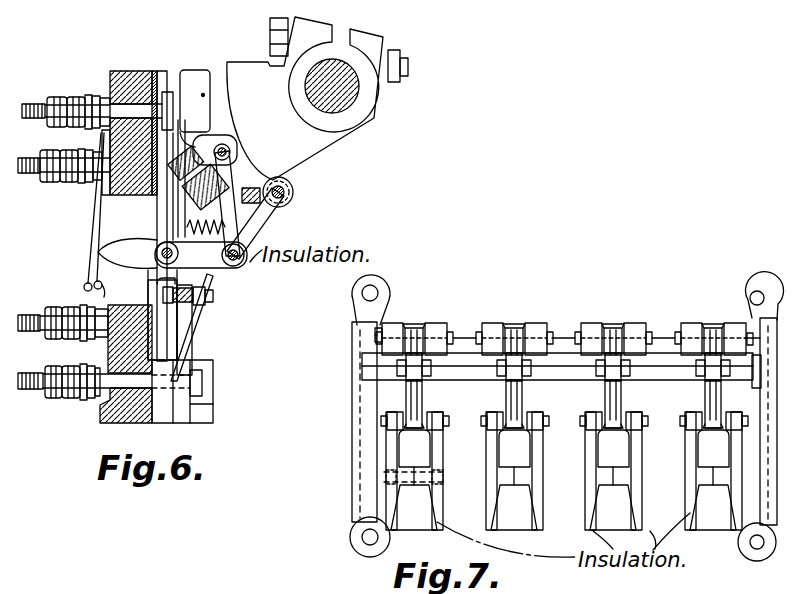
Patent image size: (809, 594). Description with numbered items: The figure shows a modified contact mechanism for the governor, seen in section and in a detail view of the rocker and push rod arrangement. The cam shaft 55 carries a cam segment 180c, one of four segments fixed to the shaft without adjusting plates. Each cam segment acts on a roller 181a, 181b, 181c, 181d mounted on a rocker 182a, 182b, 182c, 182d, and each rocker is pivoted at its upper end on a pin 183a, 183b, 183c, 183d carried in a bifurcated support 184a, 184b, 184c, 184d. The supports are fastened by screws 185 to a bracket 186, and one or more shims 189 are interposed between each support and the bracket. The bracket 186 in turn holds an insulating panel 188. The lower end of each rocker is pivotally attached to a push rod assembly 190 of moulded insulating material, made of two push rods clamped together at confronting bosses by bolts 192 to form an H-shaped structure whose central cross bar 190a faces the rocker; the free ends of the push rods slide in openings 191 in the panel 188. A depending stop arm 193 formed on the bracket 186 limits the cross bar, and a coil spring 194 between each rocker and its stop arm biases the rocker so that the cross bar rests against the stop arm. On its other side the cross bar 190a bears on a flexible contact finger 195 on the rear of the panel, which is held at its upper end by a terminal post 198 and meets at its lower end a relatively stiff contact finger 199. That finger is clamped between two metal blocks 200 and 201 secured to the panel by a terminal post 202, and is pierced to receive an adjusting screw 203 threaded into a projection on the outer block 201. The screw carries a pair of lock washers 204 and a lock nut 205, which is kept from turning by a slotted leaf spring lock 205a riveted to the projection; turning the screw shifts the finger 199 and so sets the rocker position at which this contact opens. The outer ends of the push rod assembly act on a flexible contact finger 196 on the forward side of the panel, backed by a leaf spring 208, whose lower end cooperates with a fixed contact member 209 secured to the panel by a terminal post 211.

In FIG. 6, the cam shaft 55 is at (343, 104).
In FIG. 6, the cam segment 180c is at (368, 105).
In FIG. 7, the roller 181a is at (406, 367).
In FIG. 7, the roller 181b is at (517, 374).
In FIG. 6, the roller 181c is at (293, 192).
In FIG. 7, the roller 181c is at (617, 374).
In FIG. 7, the roller 181d is at (703, 380).
In FIG. 7, the rocker 182a is at (417, 433).
In FIG. 7, the rocker 182b is at (506, 396).
In FIG. 6, the rocker 182c is at (240, 176).
In FIG. 7, the rocker 182c is at (608, 432).
In FIG. 7, the rocker 182d is at (712, 440).
In FIG. 7, the pin 183a is at (375, 337).
In FIG. 7, the pin 183b is at (476, 336).
In FIG. 7, the pin 183c is at (576, 336).
In FIG. 7, the pin 183d is at (676, 336).
In FIG. 7, the bifurcated support 184a is at (435, 322).
In FIG. 7, the bifurcated support 184b is at (537, 322).
In FIG. 6, the bifurcated support 184c is at (236, 142).
In FIG. 7, the bifurcated support 184c is at (636, 322).
In FIG. 7, the bifurcated support 184d is at (735, 322).
In FIG. 6, the screws 185 is at (180, 188).
In FIG. 6, the bracket 186 is at (190, 70).
In FIG. 7, the bracket 186 is at (353, 397).
In FIG. 6, the insulating panel 188 is at (122, 70).
In FIG. 6, the shims 189 is at (222, 140).
In FIG. 7, the push rod assembly 190 is at (433, 452).
In FIG. 7, the cross bar 190a is at (517, 487).
In FIG. 6, the openings 191 is at (126, 354).
In FIG. 6, the bolts 192 is at (130, 280).
In FIG. 7, the bolts 192 is at (417, 487).
In FIG. 6, the stop arm 193 is at (201, 255).
In FIG. 6, the coil spring 194 is at (236, 248).
In FIG. 6, the flexible contact finger 195 is at (158, 226).
In FIG. 6, the flexible contact finger 196 is at (96, 262).
In FIG. 6, the terminal post 198 is at (36, 100).
In FIG. 6, the contact finger 199 is at (163, 358).
In FIG. 6, the metal block 200 is at (160, 404).
In FIG. 6, the metal block 201 is at (213, 410).
In FIG. 6, the terminal post 202 is at (35, 392).
In FIG. 6, the adjusting screw 203 is at (170, 337).
In FIG. 6, the lock washers 204 is at (196, 320).
In FIG. 6, the lock nut 205 is at (194, 299).
In FIG. 6, the leaf spring lock 205a is at (213, 291).
In FIG. 6, the leaf spring 208 is at (98, 207).
In FIG. 6, the fixed contact member 209 is at (84, 297).
In FIG. 6, the terminal post 211 is at (33, 333).